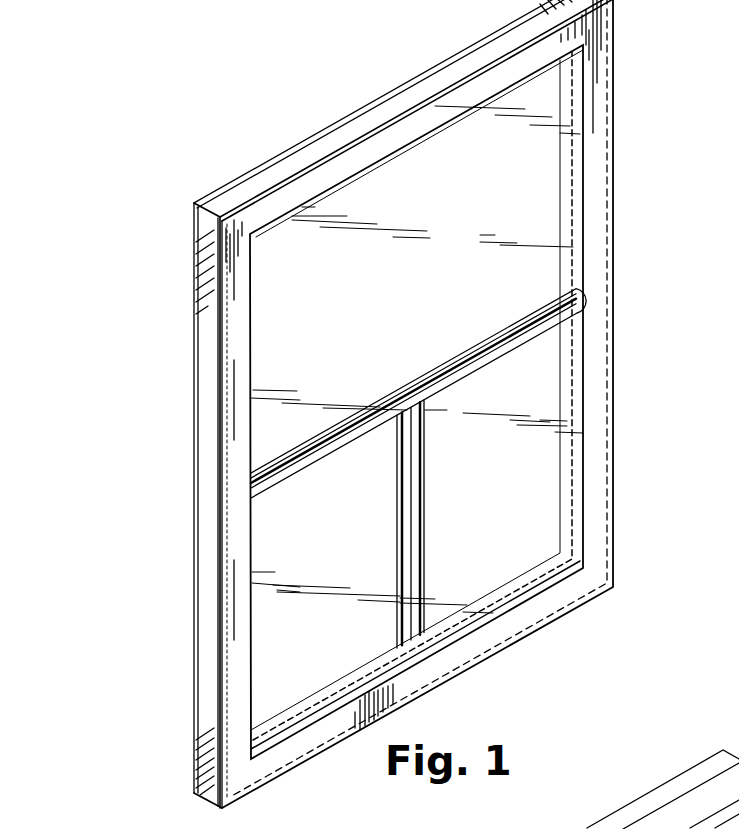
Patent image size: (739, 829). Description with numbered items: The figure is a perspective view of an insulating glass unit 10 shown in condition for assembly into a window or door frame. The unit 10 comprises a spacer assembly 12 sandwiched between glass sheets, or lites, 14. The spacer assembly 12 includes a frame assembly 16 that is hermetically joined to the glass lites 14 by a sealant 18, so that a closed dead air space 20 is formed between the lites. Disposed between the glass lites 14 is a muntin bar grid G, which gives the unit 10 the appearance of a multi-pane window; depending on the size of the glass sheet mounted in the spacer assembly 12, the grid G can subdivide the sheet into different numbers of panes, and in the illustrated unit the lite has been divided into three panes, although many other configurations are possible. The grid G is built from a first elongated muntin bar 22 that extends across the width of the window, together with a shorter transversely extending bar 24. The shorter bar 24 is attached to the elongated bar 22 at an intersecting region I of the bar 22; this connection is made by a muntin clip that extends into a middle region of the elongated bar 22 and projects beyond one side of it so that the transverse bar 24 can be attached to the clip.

The insulating glass unit 10 is at (124, 638).
The spacer assembly 12 is at (206, 797).
The glass sheets 14 is at (283, 535).
The frame assembly 16 is at (288, 726).
The sealant 18 is at (207, 422).
The dead air space 20 is at (573, 458).
The elongated muntin bar 22 is at (325, 450).
The transversely extending muntin bar 24 is at (413, 477).
The muntin bar grid G is at (520, 339).
The intersecting region I is at (428, 367).